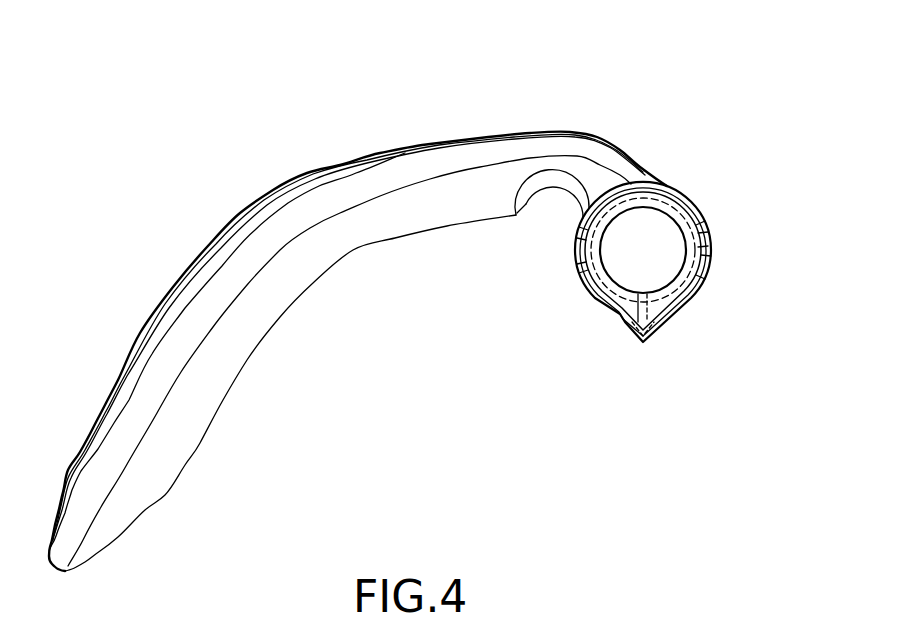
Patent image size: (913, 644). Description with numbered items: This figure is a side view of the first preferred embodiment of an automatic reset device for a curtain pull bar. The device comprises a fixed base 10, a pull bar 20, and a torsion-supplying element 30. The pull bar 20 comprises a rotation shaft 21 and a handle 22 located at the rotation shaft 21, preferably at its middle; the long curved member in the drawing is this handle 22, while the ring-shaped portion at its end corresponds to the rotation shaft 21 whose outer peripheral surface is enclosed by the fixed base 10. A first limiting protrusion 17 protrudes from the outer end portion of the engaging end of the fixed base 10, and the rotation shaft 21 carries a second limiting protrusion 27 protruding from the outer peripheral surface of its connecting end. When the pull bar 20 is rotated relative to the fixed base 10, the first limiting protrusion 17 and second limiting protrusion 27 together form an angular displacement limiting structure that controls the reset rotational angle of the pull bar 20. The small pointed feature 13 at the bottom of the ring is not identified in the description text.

The fixed base 10 is at (697, 301).
The tip lug 13 is at (656, 326).
The first limiting protrusion 17 is at (576, 233).
The pull bar 20 is at (578, 115).
The rotation shaft 21 is at (576, 262).
The handle 22 is at (427, 159).
The second limiting protrusion 27 is at (702, 213).
The torsion-supplying element 30 is at (712, 270).